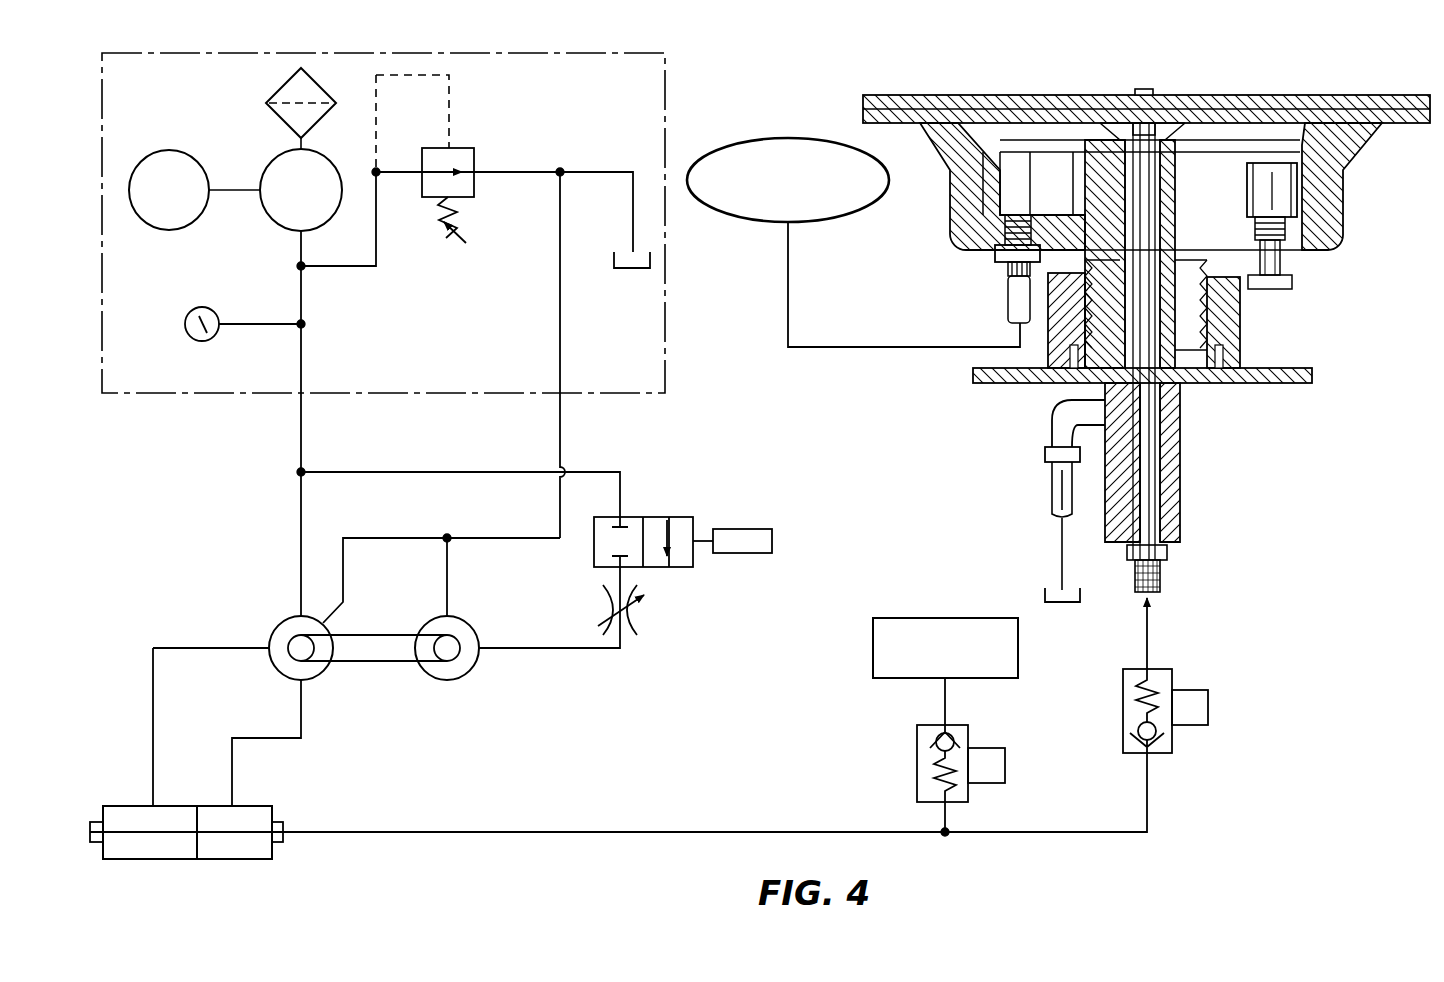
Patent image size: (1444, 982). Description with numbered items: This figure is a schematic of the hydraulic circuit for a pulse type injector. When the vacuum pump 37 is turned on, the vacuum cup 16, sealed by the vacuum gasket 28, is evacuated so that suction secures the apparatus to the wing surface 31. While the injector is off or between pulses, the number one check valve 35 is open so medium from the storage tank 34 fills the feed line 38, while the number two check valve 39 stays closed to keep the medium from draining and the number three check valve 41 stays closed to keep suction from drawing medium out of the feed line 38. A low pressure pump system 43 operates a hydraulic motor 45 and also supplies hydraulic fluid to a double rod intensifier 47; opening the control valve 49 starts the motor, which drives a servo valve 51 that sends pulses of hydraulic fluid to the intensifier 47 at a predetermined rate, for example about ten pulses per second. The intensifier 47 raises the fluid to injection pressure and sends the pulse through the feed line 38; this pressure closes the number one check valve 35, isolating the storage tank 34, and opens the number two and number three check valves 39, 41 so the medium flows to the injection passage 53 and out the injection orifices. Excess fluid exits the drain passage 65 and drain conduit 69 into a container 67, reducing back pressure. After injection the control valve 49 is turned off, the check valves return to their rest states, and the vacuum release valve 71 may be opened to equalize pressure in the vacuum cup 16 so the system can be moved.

The vacuum cup 16 is at (950, 232).
The vacuum gasket 28 is at (935, 150).
The surface 31 is at (905, 123).
The storage tank 34 is at (948, 620).
The number one check valve 35 is at (968, 793).
The vacuum pump 37 is at (772, 138).
The feed line 38 is at (470, 832).
The number two check valve 39 is at (1172, 745).
The number three check valve 41 is at (1170, 196).
The pump system 43 is at (430, 395).
The hydraulic motor 45 is at (455, 680).
The double rod intensifier 47 is at (170, 804).
The control valve 49 is at (658, 517).
The servo valve 51 is at (283, 676).
The injection passage 53 is at (1180, 438).
The drain passage 65 is at (1090, 393).
The container 67 is at (1062, 604).
The drain conduit 69 is at (1058, 565).
The vacuum release valve 71 is at (1288, 262).